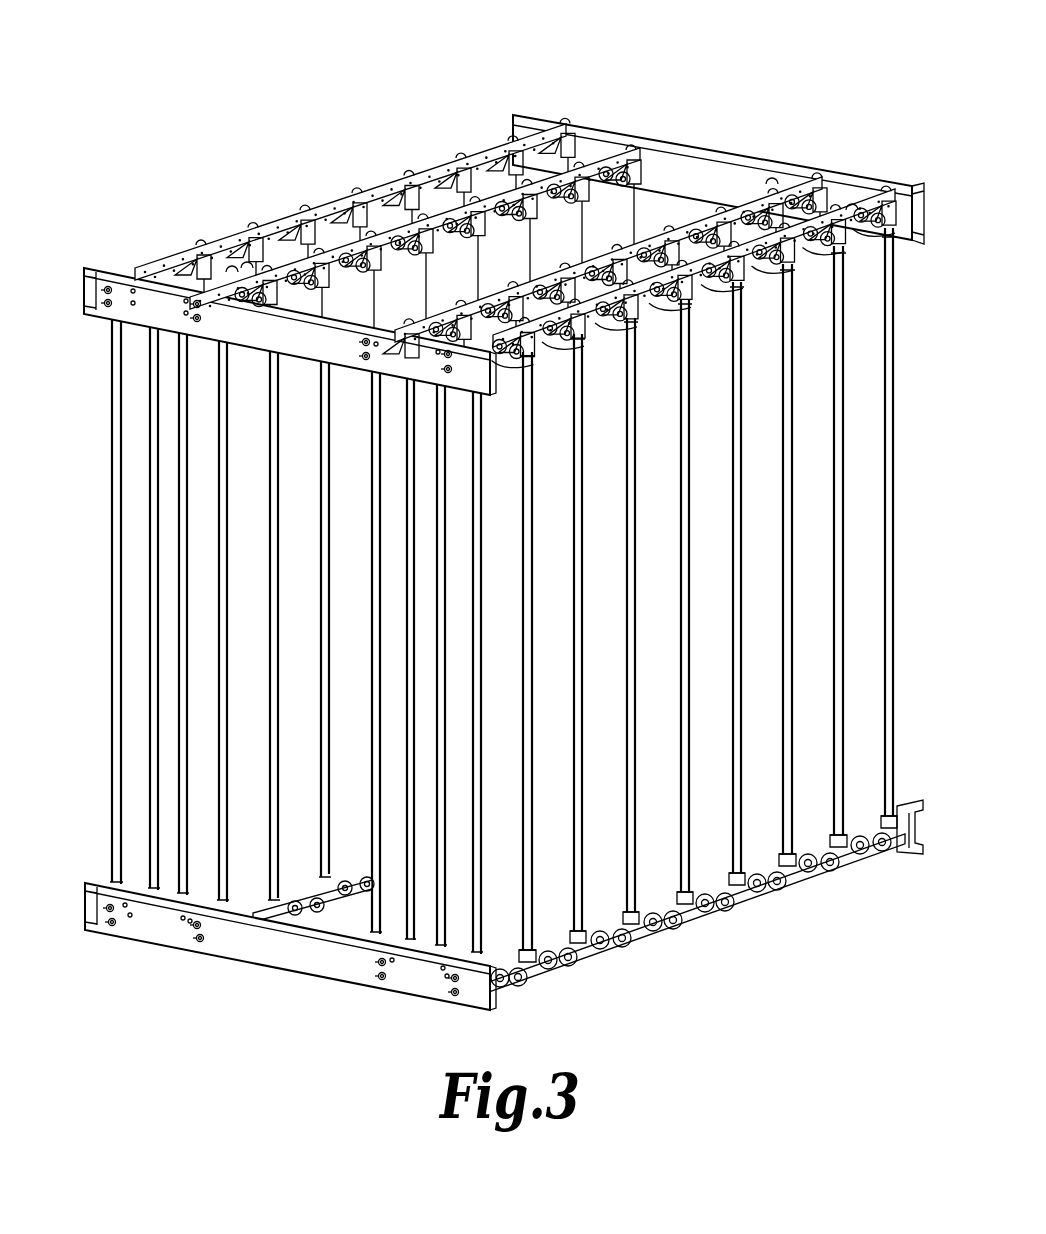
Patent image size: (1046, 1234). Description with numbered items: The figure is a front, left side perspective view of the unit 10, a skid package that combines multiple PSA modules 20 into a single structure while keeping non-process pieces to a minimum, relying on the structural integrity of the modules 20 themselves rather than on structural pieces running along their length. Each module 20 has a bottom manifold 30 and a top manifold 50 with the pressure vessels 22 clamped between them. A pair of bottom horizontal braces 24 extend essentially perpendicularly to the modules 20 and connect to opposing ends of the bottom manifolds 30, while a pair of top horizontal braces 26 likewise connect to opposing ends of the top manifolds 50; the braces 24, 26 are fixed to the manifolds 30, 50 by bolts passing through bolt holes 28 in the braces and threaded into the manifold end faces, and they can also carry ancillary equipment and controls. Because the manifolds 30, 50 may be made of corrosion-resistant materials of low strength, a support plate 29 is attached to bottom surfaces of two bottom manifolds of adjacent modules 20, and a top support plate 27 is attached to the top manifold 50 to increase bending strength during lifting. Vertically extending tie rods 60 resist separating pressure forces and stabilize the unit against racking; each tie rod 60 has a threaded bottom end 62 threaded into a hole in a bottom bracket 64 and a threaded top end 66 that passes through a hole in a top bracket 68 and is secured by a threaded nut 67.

The unit 10 is at (491, 531).
The PSA module 20 is at (328, 259).
The pressure vessel 22 is at (130, 518).
The bottom horizontal brace 24 is at (286, 940).
The top horizontal brace 26 is at (697, 168).
The top support plate 27 is at (247, 268).
The bolt hole 28 is at (386, 346).
The support plate 29 is at (333, 918).
The bottom manifold 30 is at (323, 888).
The top manifold 50 is at (522, 223).
The tie rod 60 is at (534, 546).
The threaded bottom end 62 is at (533, 950).
The bottom bracket 64 is at (524, 952).
The threaded top end 66 is at (545, 350).
The threaded nut 67 is at (532, 366).
The top bracket 68 is at (512, 360).